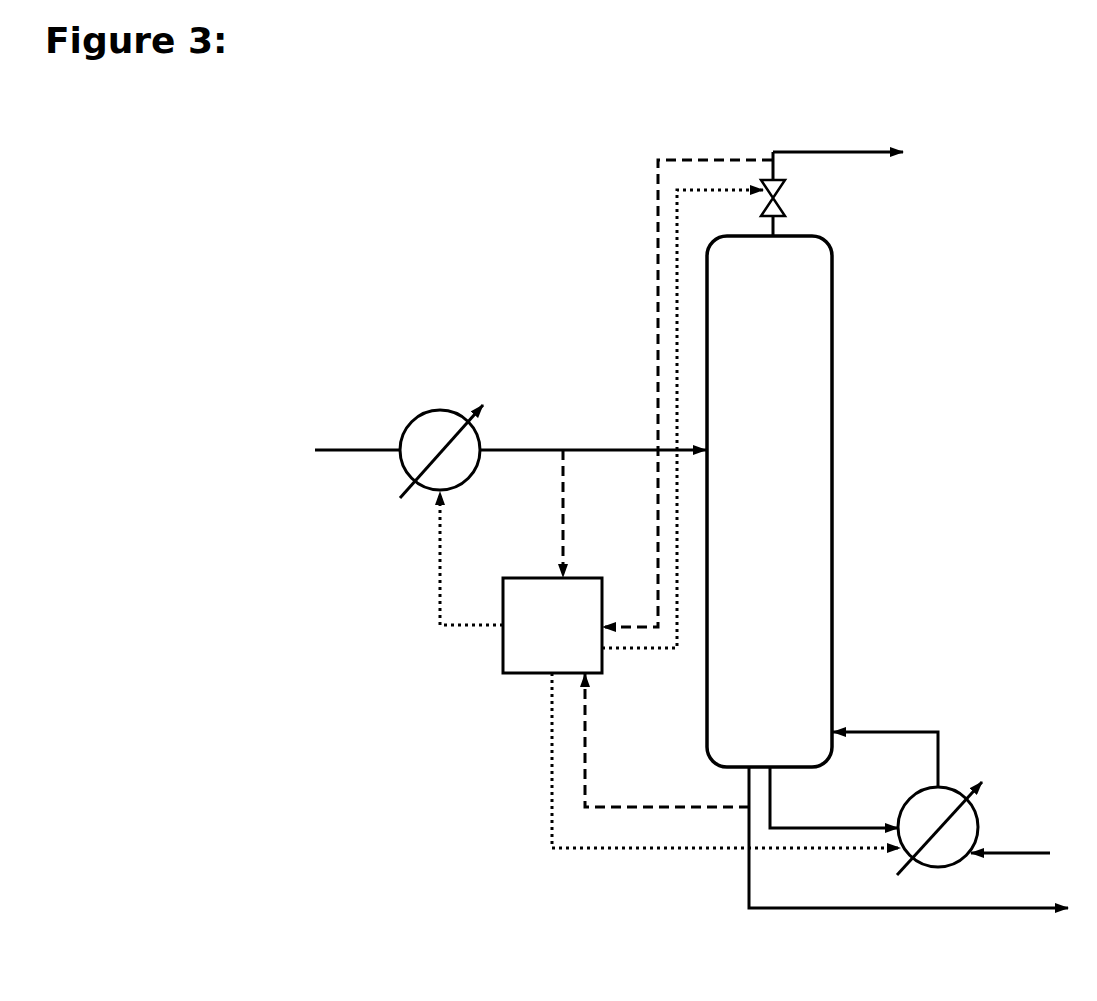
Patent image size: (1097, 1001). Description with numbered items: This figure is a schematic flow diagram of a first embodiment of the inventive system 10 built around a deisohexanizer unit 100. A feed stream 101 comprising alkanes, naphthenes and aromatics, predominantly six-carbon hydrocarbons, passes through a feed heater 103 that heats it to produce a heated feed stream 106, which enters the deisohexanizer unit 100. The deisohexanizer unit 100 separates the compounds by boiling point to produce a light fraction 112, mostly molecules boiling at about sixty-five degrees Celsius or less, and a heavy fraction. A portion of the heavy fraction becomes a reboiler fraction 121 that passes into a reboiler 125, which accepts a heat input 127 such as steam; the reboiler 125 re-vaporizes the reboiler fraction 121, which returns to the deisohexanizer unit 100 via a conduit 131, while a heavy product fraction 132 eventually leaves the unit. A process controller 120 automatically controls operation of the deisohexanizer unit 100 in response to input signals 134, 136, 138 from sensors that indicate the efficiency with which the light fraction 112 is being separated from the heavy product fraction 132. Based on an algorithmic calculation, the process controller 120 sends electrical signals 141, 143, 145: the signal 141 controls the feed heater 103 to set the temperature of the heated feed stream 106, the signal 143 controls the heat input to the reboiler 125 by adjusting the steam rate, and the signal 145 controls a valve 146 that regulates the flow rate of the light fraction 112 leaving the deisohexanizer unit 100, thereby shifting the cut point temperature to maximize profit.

The process system 10 is at (440, 158).
The deisohexanizer unit 100 is at (832, 240).
The feed stream 101 is at (357, 434).
The feed heater 103 is at (412, 418).
The heated feed stream 106 is at (593, 434).
The light fraction 112 is at (838, 135).
The process controller 120 is at (552, 625).
The reboiler fraction 121 is at (834, 797).
The reboiler 125 is at (983, 828).
The heat input 127 is at (1033, 855).
The conduit 131 is at (885, 744).
The heavy product fraction 132 is at (908, 854).
The input signal 134 is at (584, 513).
The input signal 136 is at (667, 740).
The input signal 138 is at (687, 378).
The signal 141 is at (445, 558).
The signal 143 is at (726, 775).
The signal 145 is at (682, 419).
The valve 146 is at (793, 194).